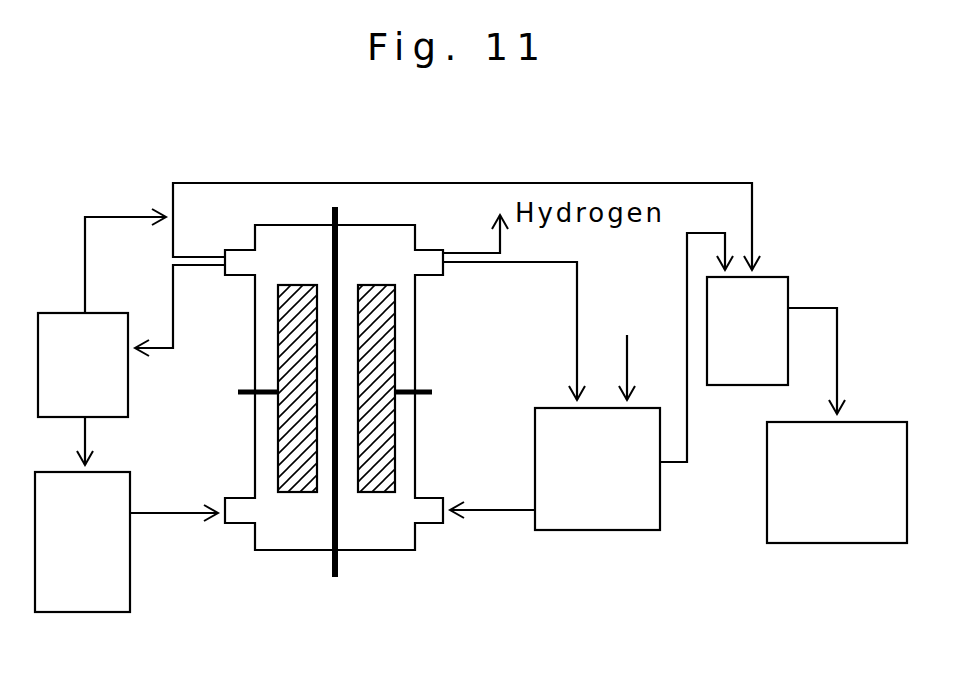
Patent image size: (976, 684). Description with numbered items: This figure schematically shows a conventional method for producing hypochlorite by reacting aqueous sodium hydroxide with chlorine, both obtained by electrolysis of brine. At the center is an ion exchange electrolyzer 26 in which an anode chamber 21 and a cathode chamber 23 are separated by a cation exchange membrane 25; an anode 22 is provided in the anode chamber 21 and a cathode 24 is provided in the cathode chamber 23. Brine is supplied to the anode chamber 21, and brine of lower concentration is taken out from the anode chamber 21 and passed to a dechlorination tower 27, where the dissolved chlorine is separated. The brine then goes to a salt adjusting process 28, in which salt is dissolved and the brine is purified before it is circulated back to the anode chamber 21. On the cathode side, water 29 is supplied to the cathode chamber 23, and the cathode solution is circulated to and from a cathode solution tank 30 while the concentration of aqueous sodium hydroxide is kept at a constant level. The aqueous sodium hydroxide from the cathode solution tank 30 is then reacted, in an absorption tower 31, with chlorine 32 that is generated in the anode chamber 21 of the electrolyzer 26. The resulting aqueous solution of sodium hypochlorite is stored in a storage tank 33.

The anode chamber 21 is at (268, 365).
The anode 22 is at (288, 430).
The cathode chamber 23 is at (410, 361).
The cathode 24 is at (380, 428).
The cation exchange membrane 25 is at (330, 207).
The ion exchange electrolyzer 26 is at (298, 557).
The dechlorination tower 27 is at (83, 365).
The salt adjusting process 28 is at (82, 542).
The water 29 is at (625, 348).
The cathode solution tank 30 is at (597, 469).
The absorption tower 31 is at (747, 331).
The chlorine 32 is at (567, 170).
The storage tank 33 is at (837, 482).